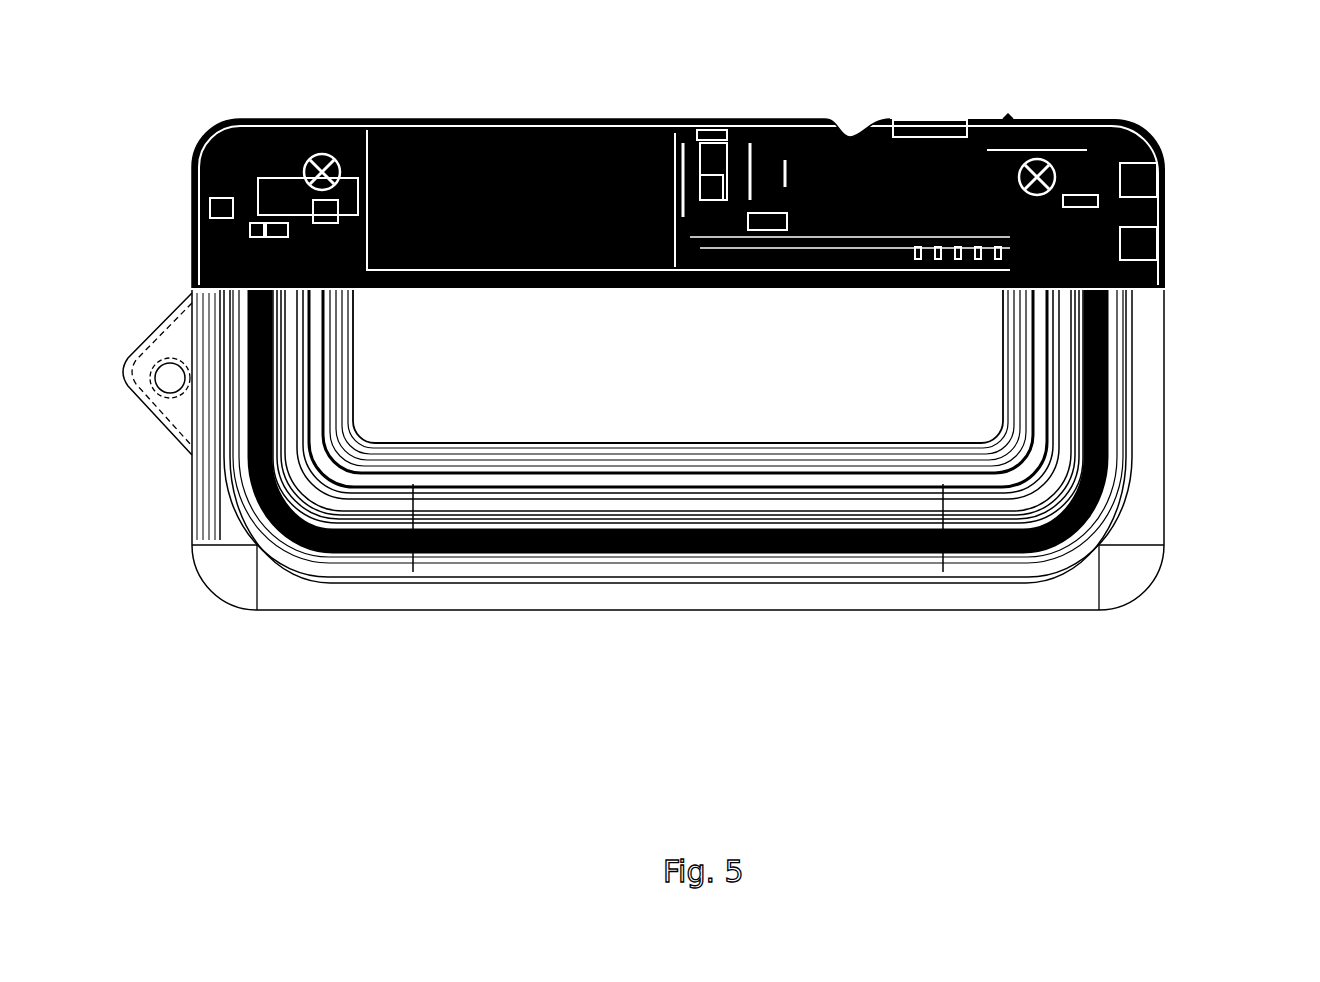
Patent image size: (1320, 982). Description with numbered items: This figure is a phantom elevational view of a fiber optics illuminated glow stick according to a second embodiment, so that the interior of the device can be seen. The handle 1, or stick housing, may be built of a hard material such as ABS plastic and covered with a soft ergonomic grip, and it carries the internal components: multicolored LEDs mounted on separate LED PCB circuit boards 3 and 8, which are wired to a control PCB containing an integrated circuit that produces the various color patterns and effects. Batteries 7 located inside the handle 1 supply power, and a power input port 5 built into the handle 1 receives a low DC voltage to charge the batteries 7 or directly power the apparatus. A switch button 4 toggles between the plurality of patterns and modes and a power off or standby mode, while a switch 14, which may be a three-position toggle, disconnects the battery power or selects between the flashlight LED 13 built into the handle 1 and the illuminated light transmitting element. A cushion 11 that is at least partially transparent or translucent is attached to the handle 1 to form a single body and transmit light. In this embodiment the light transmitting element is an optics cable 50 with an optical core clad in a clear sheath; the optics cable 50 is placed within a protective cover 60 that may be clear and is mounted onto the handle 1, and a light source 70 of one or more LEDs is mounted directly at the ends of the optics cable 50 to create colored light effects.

The handle 1 is at (400, 118).
The LED PCB circuit board 3 is at (203, 153).
The switch button 4 is at (837, 133).
The power input port 5 is at (710, 120).
The batteries 7 is at (562, 120).
The LED PCB circuit board 8 is at (1117, 127).
The cushion 11 is at (712, 610).
The flashlight LED 13 is at (1170, 168).
The switch 14 is at (1007, 120).
The optics cable 50 is at (885, 540).
The protective cover 60 is at (467, 578).
The light source 70 is at (197, 227).